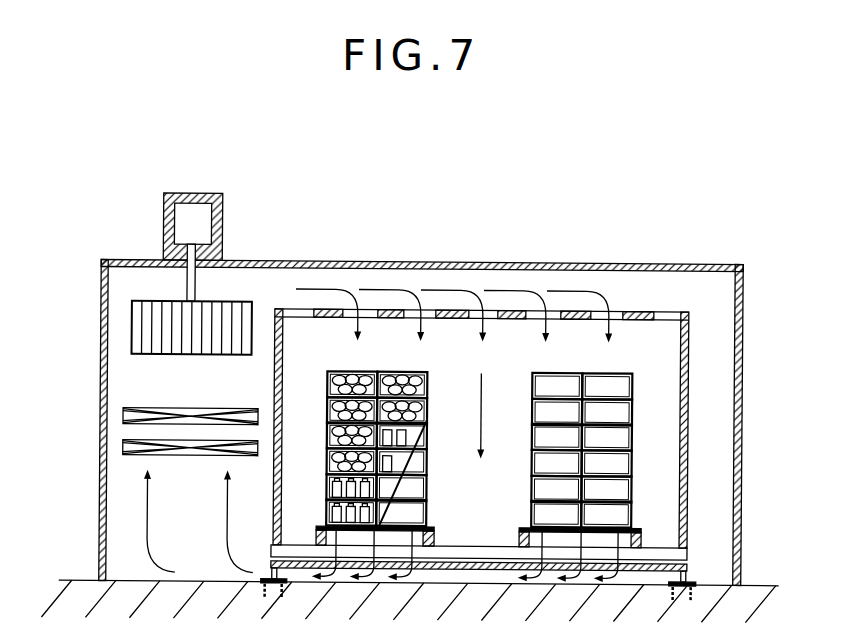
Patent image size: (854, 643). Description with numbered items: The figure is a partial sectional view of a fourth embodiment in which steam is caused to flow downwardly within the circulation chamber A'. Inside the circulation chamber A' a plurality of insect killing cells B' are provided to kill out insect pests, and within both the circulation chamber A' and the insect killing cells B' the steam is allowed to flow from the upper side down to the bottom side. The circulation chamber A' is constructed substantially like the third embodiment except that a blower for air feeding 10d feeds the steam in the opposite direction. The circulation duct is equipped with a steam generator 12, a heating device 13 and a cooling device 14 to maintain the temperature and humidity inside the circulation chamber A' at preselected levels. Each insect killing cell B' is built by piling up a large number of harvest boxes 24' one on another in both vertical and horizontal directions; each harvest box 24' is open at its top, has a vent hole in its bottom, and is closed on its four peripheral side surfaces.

The blower for air feeding 10d is at (131, 332).
The heating device 13 is at (151, 405).
The cooling device 14 is at (123, 418).
The steam generator 12 is at (123, 450).
The harvest box 24' is at (485, 459).
The circulation chamber A' is at (421, 388).
The insect killing cell B' is at (478, 428).